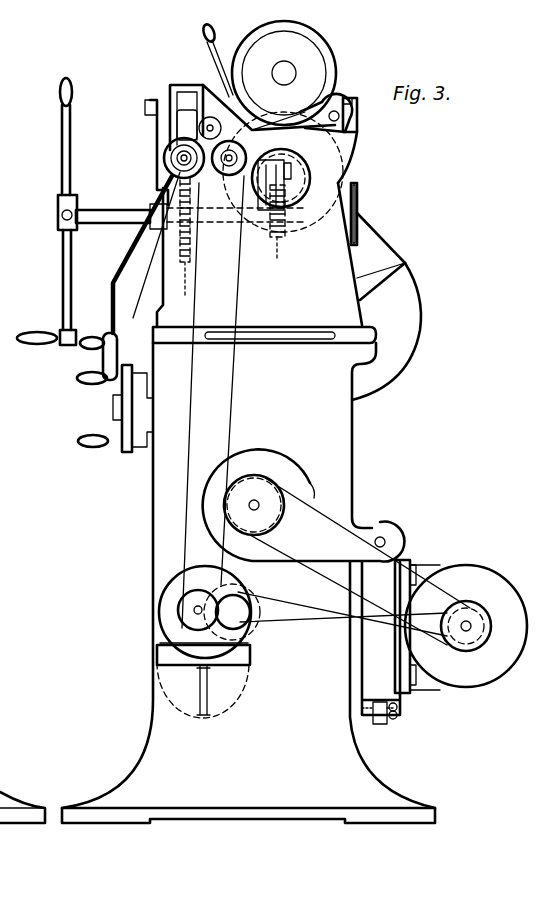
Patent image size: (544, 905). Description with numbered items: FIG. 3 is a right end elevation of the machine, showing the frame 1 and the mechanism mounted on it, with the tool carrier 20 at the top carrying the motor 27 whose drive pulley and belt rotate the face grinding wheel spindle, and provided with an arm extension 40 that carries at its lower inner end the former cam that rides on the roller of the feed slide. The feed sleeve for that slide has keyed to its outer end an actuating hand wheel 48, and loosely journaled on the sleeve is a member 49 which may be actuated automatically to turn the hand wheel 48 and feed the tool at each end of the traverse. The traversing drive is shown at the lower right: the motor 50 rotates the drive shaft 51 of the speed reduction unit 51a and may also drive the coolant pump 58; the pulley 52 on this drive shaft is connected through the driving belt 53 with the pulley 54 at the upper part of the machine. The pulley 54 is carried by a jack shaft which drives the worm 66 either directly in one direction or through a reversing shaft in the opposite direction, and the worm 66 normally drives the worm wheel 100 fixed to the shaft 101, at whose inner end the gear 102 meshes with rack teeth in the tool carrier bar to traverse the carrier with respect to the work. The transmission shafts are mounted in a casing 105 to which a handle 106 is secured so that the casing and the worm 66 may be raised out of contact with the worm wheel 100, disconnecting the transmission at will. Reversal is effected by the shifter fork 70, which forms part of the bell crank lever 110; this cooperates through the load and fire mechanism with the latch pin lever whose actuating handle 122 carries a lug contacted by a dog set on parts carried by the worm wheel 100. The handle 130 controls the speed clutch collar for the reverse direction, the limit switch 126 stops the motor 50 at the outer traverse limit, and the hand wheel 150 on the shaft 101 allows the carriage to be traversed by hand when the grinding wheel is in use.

The machine frame 1 is at (343, 451).
The tool carrier 20 is at (372, 256).
The motor 27 is at (312, 60).
The arm extension 40 is at (410, 305).
The actuating hand wheel 48 is at (120, 432).
The member 49 is at (148, 445).
The motor 50 is at (466, 568).
The drive shaft 51 is at (200, 618).
The speed reduction unit 51a is at (168, 596).
The pulley 52 is at (183, 612).
The driving belt 53 is at (183, 488).
The pulley 54 is at (229, 176).
The coolant pump 58 is at (268, 478).
The worm 66 is at (166, 172).
The shifter fork 70 is at (168, 155).
The worm wheel 100 is at (183, 250).
The shaft 101 is at (97, 212).
The gear 102 is at (286, 234).
The casing 105 is at (175, 85).
The handle 106 is at (136, 320).
The bell crank lever 110 is at (183, 124).
The actuating handle 122 is at (113, 280).
The limit switch 126 is at (283, 185).
The handle 130 is at (205, 38).
The hand wheel 150 is at (62, 302).